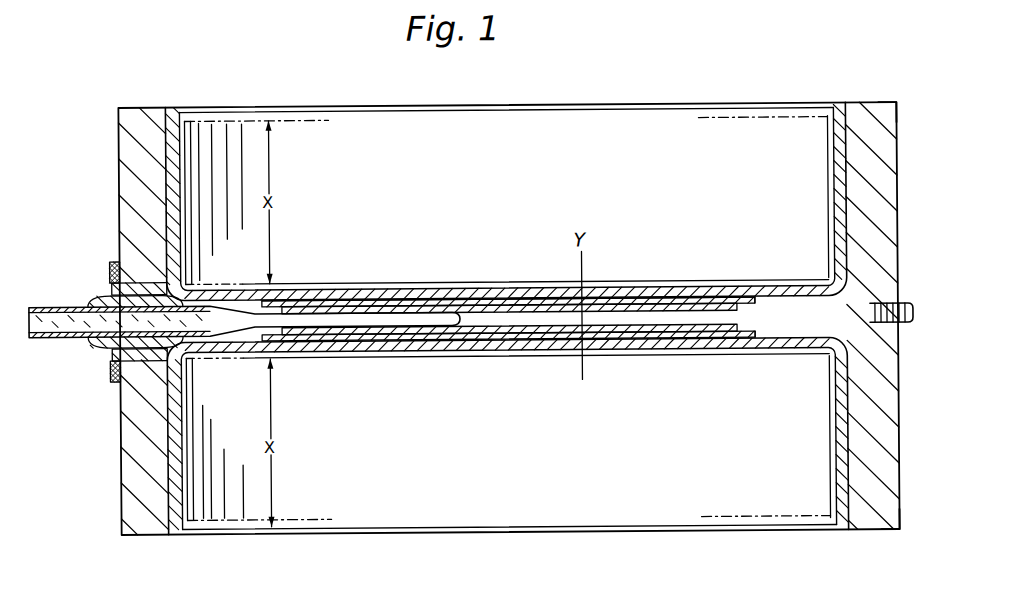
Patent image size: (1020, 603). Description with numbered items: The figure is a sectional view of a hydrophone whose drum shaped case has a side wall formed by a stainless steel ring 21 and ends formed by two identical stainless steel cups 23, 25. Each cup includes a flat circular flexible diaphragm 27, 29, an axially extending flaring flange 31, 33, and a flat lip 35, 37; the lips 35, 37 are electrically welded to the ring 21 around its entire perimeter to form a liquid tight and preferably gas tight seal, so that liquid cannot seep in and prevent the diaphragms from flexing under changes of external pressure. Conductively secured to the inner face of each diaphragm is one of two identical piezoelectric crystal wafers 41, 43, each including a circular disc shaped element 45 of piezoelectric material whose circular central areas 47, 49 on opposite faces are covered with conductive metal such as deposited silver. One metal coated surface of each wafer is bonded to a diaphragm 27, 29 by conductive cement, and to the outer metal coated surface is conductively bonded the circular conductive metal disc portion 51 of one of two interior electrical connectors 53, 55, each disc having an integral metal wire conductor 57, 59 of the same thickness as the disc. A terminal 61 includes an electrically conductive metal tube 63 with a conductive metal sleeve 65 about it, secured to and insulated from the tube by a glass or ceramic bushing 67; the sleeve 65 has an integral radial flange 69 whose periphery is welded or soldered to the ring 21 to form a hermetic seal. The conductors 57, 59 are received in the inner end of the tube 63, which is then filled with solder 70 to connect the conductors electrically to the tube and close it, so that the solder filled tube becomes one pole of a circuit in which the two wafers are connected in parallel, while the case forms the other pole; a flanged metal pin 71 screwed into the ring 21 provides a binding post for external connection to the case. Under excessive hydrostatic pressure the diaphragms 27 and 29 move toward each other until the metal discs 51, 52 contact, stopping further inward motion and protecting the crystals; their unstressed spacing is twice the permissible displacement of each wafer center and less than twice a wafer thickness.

The stainless steel ring 21 is at (118, 167).
The stainless steel cup 23 is at (829, 206).
The stainless steel cup 25 is at (829, 446).
The flexible diaphragm 27 is at (690, 287).
The flexible diaphragm 29 is at (690, 352).
The flaring flange 31 is at (829, 226).
The flaring flange 33 is at (832, 410).
The flat lip 35 is at (861, 104).
The flat lip 37 is at (868, 534).
The piezoelectric crystal wafer 41 is at (761, 302).
The piezoelectric crystal wafer 43 is at (761, 332).
The disc shaped element 45 is at (303, 300).
The central area 47 is at (338, 303).
The central area 49 is at (382, 308).
The conductive metal disc portion 51 is at (478, 310).
The metal disc 52 is at (480, 337).
The interior electrical connector 53 is at (518, 302).
The interior electrical connector 55 is at (517, 340).
The metal wire electric conductor 57 is at (228, 307).
The metal wire electric conductor 59 is at (233, 333).
The terminal 61 is at (110, 373).
The electrically conductive metal tube 63 is at (49, 326).
The metal sleeve 65 is at (150, 354).
The bushing 67 is at (98, 294).
The radial flange 69 is at (110, 275).
The solder 70 is at (245, 370).
The flanged metal pin 71 is at (904, 304).